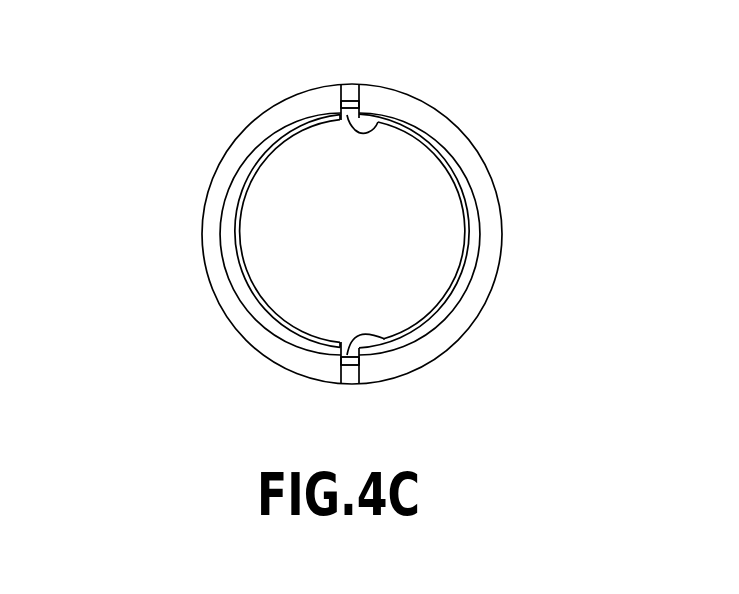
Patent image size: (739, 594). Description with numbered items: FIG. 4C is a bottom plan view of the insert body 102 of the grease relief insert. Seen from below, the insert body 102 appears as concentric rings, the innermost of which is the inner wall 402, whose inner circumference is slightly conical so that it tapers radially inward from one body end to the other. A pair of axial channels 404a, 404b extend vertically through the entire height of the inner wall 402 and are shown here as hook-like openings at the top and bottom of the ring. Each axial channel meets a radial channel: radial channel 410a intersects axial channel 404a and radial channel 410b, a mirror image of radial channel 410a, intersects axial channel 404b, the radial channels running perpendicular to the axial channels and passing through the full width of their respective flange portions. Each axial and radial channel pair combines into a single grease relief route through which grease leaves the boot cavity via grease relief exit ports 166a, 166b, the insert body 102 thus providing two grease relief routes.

The insert body 102 is at (185, 257).
The inner wall 402 is at (445, 173).
The radial channel 410a is at (351, 97).
The radial channel 410b is at (343, 378).
The grease relief exit port 166a is at (346, 95).
The grease relief exit port 166b is at (352, 385).
The axial channel 404a is at (380, 126).
The axial channel 404b is at (390, 336).